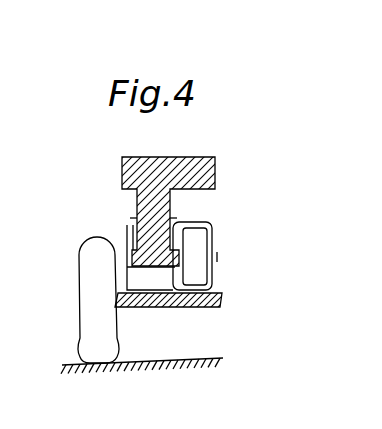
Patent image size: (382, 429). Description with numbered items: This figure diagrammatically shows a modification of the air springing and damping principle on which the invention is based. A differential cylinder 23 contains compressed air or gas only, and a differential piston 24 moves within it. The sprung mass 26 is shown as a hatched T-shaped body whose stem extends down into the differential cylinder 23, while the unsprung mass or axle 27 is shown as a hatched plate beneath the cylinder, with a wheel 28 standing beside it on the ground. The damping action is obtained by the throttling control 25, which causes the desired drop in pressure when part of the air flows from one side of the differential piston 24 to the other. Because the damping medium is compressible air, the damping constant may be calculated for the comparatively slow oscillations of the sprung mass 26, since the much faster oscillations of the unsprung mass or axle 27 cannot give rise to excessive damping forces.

The differential cylinder 23 is at (185, 277).
The differential piston 24 is at (183, 250).
The throttling control 25 is at (235, 263).
The sprung mass 26 is at (215, 163).
The unsprung mass or axle 27 is at (198, 305).
The wheel 28 is at (78, 281).